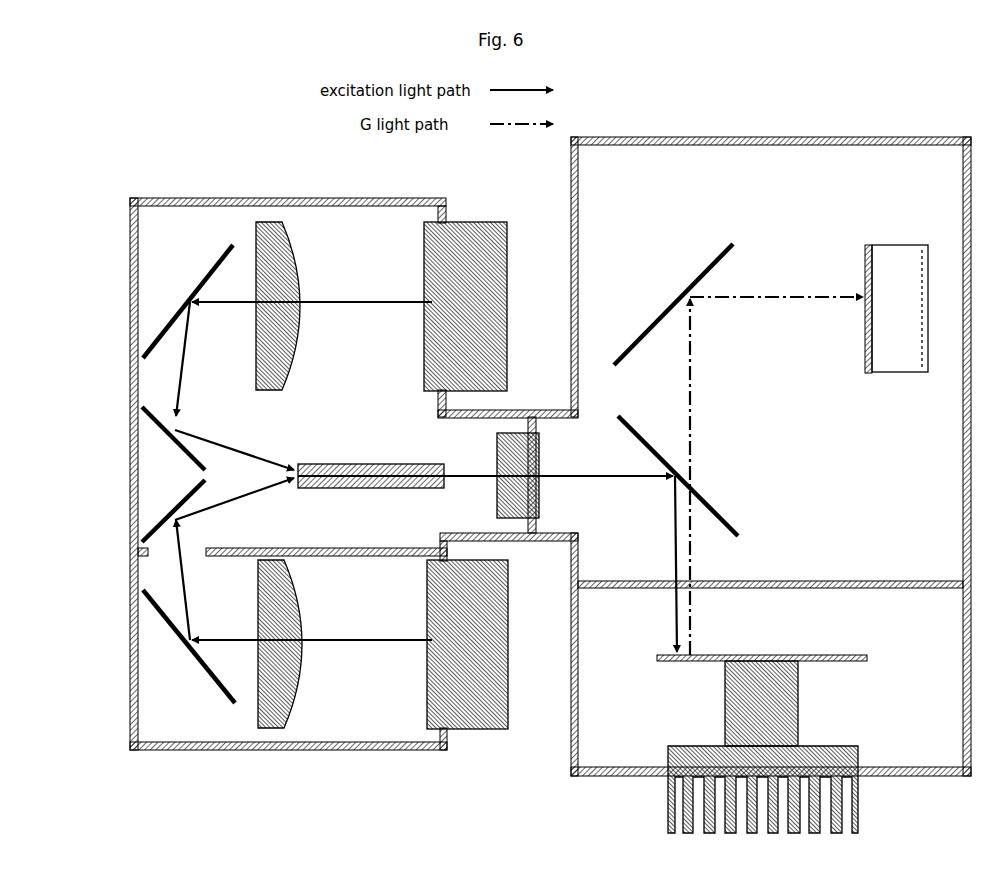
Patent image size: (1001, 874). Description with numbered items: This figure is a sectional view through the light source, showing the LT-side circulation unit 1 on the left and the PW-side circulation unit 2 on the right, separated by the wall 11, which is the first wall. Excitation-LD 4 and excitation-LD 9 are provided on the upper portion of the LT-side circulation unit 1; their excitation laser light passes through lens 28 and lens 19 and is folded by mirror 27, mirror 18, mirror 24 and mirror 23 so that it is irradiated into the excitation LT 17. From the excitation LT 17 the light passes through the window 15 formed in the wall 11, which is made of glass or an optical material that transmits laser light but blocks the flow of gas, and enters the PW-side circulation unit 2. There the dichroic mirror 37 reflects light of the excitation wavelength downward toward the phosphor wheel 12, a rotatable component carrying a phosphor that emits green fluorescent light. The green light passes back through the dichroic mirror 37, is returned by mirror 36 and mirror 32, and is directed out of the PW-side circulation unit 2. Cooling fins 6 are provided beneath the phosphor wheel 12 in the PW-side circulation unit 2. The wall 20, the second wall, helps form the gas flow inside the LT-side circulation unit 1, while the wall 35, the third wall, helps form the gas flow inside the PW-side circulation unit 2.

The LT-side circulation unit 1 is at (170, 197).
The PW-side circulation unit 2 is at (887, 172).
The excitation-LD 4 is at (465, 680).
The cooling fins 6 is at (856, 799).
The excitation-LD 9 is at (425, 255).
The wall 11 is at (535, 525).
The phosphor wheel 12 is at (731, 659).
The window 15 is at (511, 517).
The excitation LT 17 is at (380, 464).
The mirror 18 is at (150, 610).
The lens 19 is at (272, 735).
The wall 20 is at (308, 556).
The mirror 23 is at (160, 530).
The mirror 24 is at (160, 425).
The mirror 27 is at (168, 328).
The lens 28 is at (272, 222).
The mirror 32 is at (865, 265).
The wall 35 is at (784, 582).
The mirror 36 is at (653, 325).
The dichroic mirror 37 is at (710, 503).